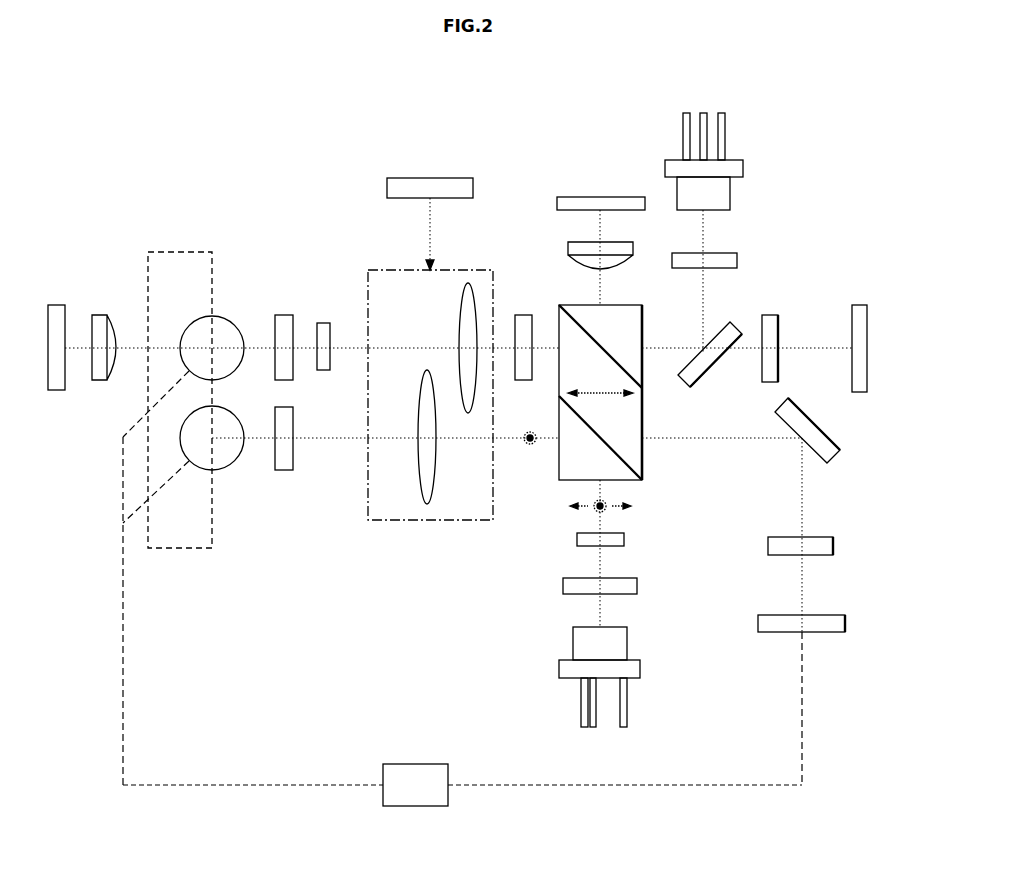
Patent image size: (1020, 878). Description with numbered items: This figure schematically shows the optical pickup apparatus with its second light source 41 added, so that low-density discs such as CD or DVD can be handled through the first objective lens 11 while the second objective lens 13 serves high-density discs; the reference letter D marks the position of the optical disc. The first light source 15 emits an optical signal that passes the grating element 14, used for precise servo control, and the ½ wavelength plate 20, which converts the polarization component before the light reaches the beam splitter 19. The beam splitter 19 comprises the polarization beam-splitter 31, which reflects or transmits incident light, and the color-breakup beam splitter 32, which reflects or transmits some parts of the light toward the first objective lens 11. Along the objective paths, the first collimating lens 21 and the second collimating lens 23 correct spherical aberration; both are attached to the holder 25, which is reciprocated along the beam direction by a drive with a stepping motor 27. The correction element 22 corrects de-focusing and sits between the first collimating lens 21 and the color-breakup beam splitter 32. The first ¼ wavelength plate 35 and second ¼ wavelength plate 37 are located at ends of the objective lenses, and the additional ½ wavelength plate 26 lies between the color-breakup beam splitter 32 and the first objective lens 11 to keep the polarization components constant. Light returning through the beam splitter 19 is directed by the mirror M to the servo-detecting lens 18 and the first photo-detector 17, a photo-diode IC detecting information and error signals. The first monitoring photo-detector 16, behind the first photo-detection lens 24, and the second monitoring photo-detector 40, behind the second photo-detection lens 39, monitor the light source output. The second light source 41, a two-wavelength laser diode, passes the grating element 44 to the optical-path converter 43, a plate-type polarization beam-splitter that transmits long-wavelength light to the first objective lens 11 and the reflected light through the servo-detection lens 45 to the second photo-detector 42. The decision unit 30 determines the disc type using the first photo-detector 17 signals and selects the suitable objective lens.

The second monitoring photo-detector 40 is at (55, 305).
The second photo-detection lens 39 is at (101, 315).
The position of an optical disc D is at (178, 251).
The first objective lens 11 is at (203, 319).
The second objective lens 13 is at (204, 469).
The first ¼ wavelength plate 35 is at (284, 314).
The ½ wavelength plate 26 is at (323, 322).
The second ¼ wavelength plate 37 is at (285, 471).
The stepping motor 27 is at (449, 178).
The holder 25 is at (468, 269).
The first collimating lens 21 is at (460, 337).
The second collimating lens 23 is at (418, 425).
The correction element 22 is at (523, 314).
The first monitoring photo-detector 16 is at (584, 196).
The first photo-detection lens 24 is at (569, 248).
The beam splitter 19 is at (645, 464).
The color-breakup beam splitter 32 is at (592, 335).
The polarization beam-splitter 31 is at (590, 424).
The ½ wavelength plate 20 is at (624, 540).
The grating element 14 is at (563, 585).
The first light source 15 is at (627, 710).
The second light source 41 is at (743, 168).
The grating element 44 is at (737, 261).
The second photo-detector 42 is at (860, 303).
The servo-detection lens 45 is at (778, 330).
The optical-path converter 43 is at (713, 367).
The mirror M is at (825, 422).
The servo-detecting lens 18 is at (833, 546).
The first photo-detector 17 is at (845, 623).
The decision unit 30 is at (423, 764).